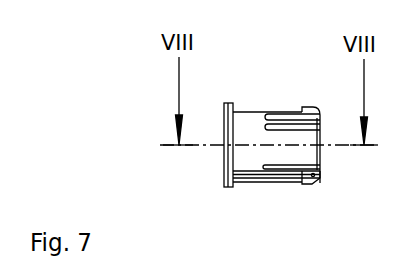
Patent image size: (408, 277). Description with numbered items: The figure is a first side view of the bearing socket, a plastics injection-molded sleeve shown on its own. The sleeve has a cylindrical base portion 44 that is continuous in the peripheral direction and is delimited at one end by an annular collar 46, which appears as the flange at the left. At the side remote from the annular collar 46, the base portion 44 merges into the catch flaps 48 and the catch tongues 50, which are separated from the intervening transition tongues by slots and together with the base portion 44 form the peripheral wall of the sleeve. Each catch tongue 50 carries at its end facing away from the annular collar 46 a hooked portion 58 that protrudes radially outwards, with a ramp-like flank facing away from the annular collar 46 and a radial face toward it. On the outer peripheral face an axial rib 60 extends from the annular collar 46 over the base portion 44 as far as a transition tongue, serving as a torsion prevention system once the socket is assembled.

The cylindrical base portion 44 is at (247, 125).
The annular collar 46 is at (227, 187).
The catch flap 48 is at (305, 157).
The catch tongue 50 is at (271, 112).
The hooked portion 58 is at (310, 106).
The axial rib 60 is at (250, 179).